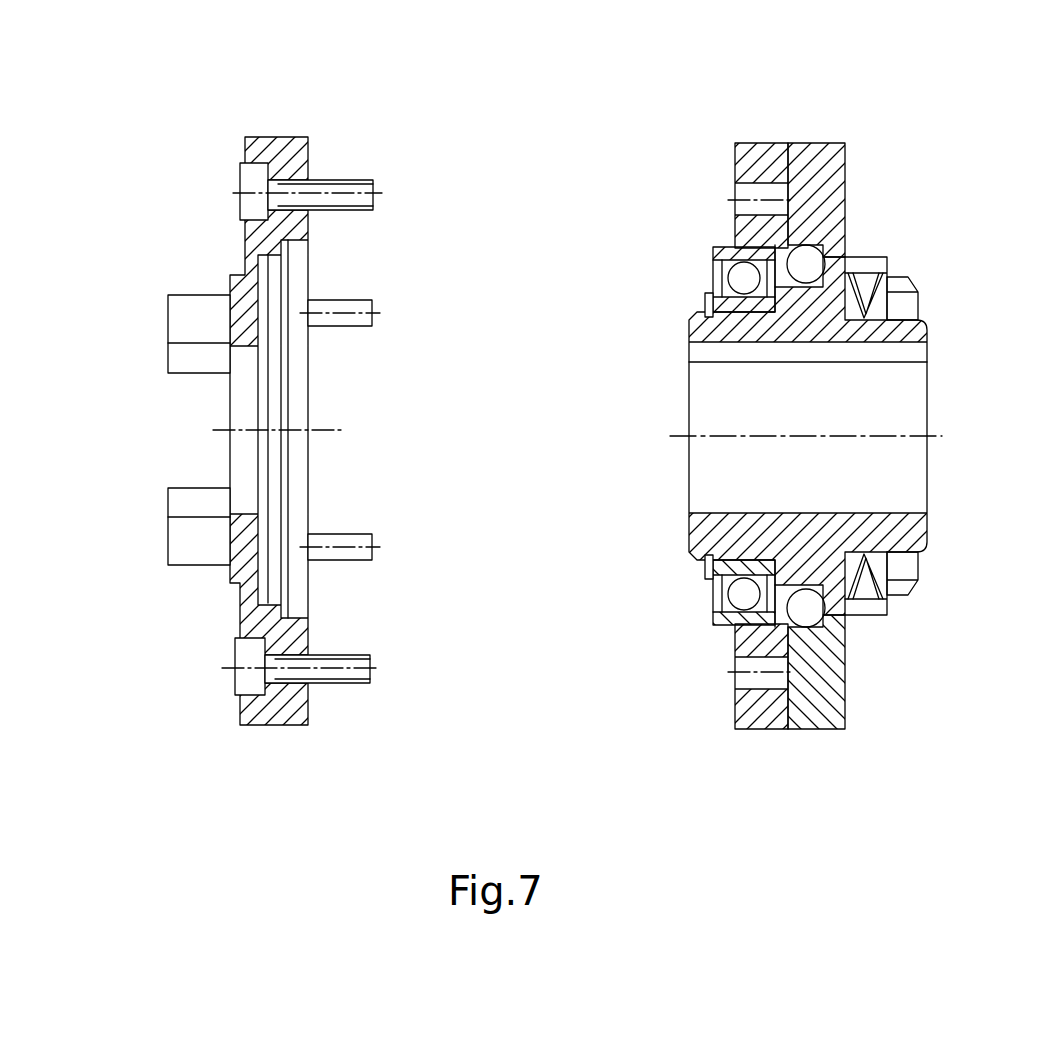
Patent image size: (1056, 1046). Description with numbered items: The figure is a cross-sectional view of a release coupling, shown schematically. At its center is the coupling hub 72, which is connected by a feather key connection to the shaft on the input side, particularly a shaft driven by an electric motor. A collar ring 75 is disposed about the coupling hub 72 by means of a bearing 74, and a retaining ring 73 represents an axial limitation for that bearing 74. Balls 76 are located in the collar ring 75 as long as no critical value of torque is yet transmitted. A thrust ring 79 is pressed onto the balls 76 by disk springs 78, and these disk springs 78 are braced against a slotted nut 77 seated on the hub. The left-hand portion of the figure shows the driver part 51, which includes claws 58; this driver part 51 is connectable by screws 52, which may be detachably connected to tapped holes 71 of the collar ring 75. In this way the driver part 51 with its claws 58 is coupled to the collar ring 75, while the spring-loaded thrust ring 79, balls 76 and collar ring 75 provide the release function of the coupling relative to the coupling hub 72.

The driver part 51 is at (228, 572).
The screws 52 is at (313, 192).
The claws 58 is at (188, 318).
The tapped holes 71 is at (743, 192).
The coupling hub 72 is at (715, 325).
The retaining ring 73 is at (703, 572).
The bearing 74 is at (708, 612).
The collar ring 75 is at (747, 710).
The balls 76 is at (805, 617).
The slotted nut 77 is at (897, 572).
The disk springs 78 is at (887, 273).
The thrust ring 79 is at (823, 167).